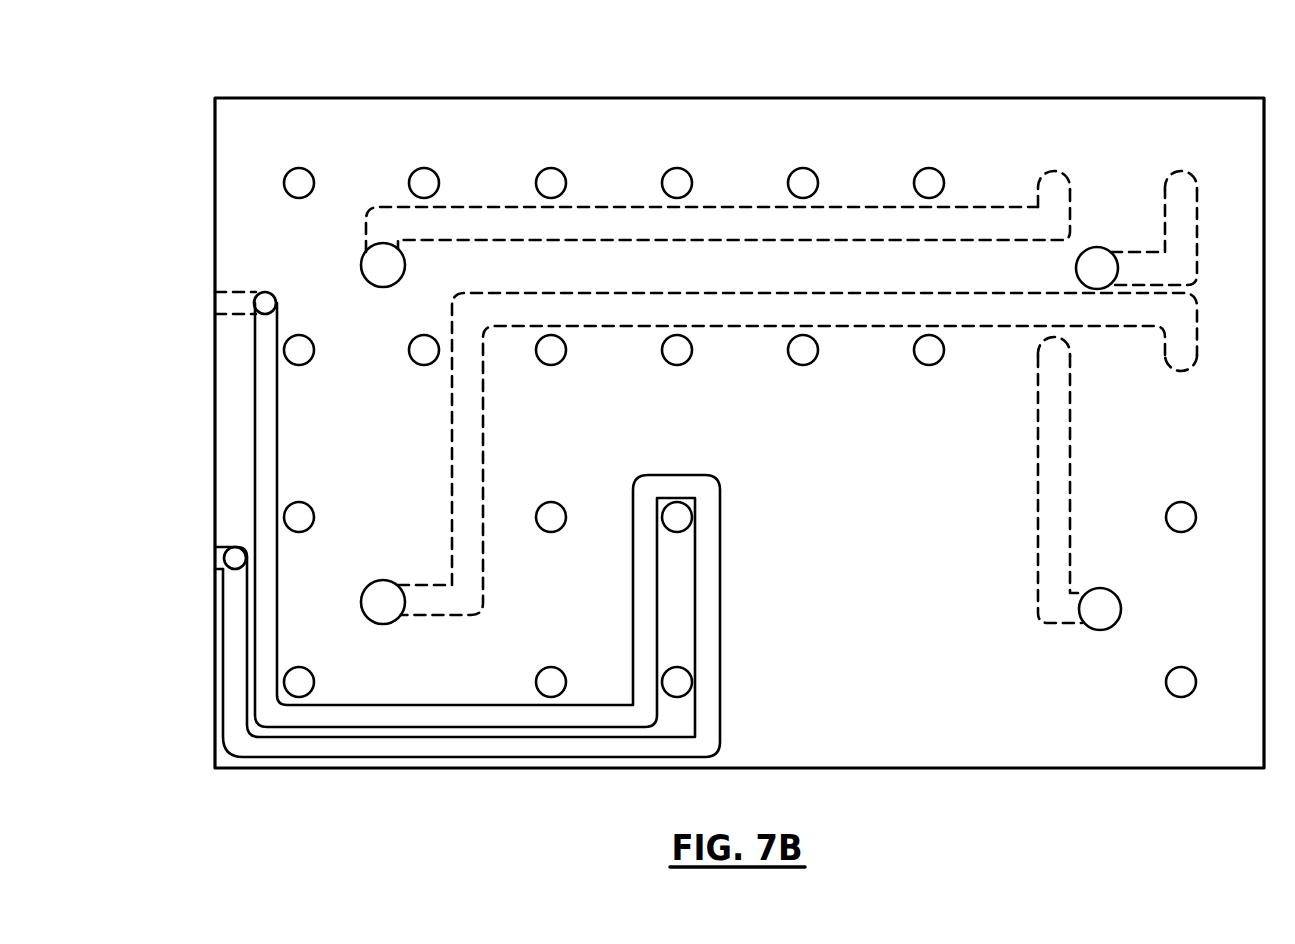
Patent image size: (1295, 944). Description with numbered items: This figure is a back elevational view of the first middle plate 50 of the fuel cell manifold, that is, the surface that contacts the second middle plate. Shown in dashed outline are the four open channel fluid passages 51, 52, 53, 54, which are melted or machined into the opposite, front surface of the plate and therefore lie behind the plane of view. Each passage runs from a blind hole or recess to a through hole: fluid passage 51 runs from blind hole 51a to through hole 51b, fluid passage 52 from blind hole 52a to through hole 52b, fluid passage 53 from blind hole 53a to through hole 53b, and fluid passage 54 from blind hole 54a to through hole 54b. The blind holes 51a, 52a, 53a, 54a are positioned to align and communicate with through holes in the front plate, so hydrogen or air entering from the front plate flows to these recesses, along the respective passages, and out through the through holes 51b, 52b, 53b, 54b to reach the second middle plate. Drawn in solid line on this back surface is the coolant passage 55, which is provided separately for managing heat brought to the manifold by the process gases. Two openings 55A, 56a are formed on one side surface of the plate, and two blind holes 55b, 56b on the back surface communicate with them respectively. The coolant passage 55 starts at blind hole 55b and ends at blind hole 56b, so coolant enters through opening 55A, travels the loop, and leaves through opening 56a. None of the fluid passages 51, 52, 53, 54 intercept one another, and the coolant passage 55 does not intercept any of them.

The first middle plate 50 is at (785, 98).
The fluid passage 51 is at (1183, 235).
The blind hole 51a is at (1172, 180).
The through hole 51b is at (1097, 268).
The fluid passage 52 is at (737, 226).
The blind hole 52a is at (1042, 188).
The through hole 52b is at (398, 283).
The fluid passage 53 is at (763, 306).
The blind hole 53a is at (1178, 357).
The through hole 53b is at (375, 604).
The fluid passage 54 is at (1052, 481).
The blind hole 54a is at (1054, 350).
The through hole 54b is at (1104, 611).
The coolant passage 55 is at (340, 748).
The opening 55A is at (213, 303).
The blind hole 55b is at (265, 292).
The opening 56a is at (213, 558).
The blind hole 56b is at (243, 567).